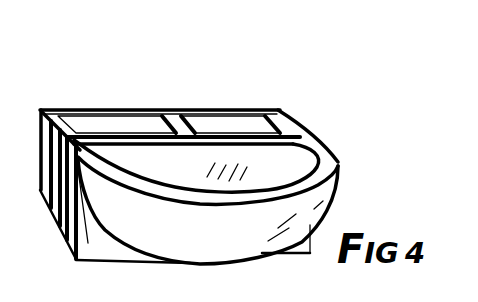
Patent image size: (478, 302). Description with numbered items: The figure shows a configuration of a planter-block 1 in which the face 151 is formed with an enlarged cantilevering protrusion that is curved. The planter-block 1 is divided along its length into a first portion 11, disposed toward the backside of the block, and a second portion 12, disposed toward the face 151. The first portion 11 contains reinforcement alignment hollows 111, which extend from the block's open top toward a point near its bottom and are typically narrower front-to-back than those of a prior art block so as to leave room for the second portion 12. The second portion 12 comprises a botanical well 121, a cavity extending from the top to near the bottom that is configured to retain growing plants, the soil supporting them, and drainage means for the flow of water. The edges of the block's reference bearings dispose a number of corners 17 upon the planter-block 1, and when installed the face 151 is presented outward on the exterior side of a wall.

The planter-block 1 is at (272, 68).
The first portion 11 is at (120, 207).
The reinforcement alignment hollow 111 is at (140, 124).
The second portion 12 is at (195, 150).
The botanical well 121 is at (223, 150).
The face 151 is at (119, 211).
The corner 17 is at (278, 115).